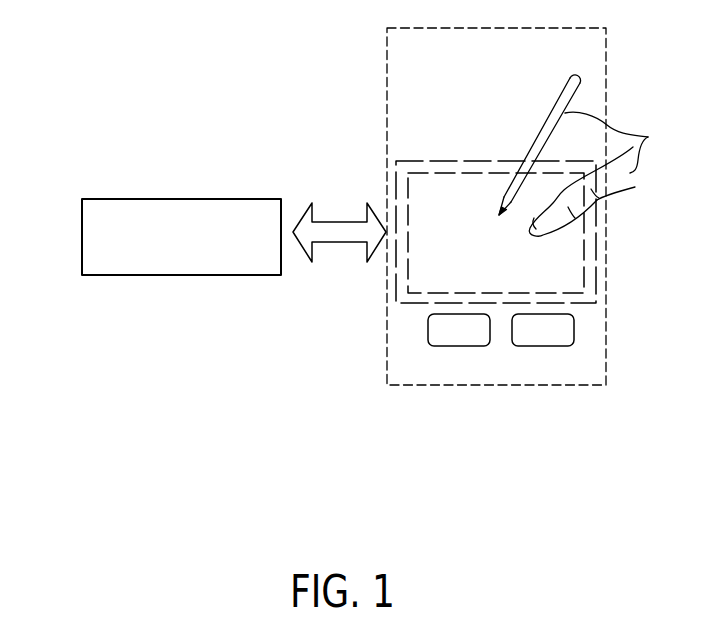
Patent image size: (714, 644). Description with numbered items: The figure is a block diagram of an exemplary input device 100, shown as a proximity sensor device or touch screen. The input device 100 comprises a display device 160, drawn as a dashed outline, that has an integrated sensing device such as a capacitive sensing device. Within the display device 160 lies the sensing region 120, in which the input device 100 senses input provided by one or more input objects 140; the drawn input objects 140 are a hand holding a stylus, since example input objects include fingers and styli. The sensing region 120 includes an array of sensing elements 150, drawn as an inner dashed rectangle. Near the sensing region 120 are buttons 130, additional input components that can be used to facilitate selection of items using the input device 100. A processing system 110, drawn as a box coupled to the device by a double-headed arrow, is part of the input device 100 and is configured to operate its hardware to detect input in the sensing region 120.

The input device 100 is at (333, 62).
The processing system 110 is at (82, 232).
The sensing region 120 is at (596, 252).
The buttons 130 is at (462, 346).
The input objects 140 is at (648, 137).
The sensing elements 150 is at (448, 175).
The display device 160 is at (606, 56).